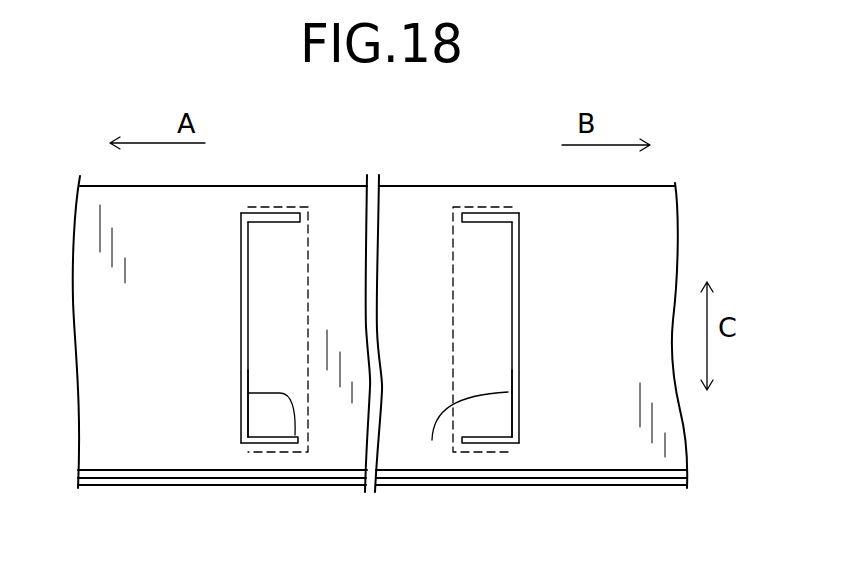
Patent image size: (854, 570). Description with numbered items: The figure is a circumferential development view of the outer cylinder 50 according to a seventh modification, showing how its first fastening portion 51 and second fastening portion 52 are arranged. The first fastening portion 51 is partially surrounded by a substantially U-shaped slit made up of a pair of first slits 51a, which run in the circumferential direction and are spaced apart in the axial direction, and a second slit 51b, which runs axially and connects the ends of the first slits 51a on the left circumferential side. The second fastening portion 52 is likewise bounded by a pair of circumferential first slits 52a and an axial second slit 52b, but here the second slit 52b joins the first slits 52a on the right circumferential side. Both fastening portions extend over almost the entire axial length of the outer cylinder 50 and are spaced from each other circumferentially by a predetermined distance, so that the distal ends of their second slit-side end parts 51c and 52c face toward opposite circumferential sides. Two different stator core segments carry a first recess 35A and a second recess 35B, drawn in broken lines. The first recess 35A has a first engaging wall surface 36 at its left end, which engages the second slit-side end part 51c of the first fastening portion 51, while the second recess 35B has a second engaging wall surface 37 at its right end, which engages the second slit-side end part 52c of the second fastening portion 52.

The outer cylinder 50 is at (301, 174).
The first recess 35A is at (308, 262).
The second recess 35B is at (453, 262).
The first engaging wall surface 36 is at (295, 435).
The second engaging wall surface 37 is at (432, 440).
The first fastening portion 51 is at (218, 329).
The first slits 51a is at (276, 213).
The second slit 51b is at (245, 328).
The second slit-side end part 51c is at (248, 377).
The second fastening portion 52 is at (540, 330).
The first slits 52a is at (488, 213).
The second slit 52b is at (515, 327).
The second slit-side end part 52c is at (515, 382).